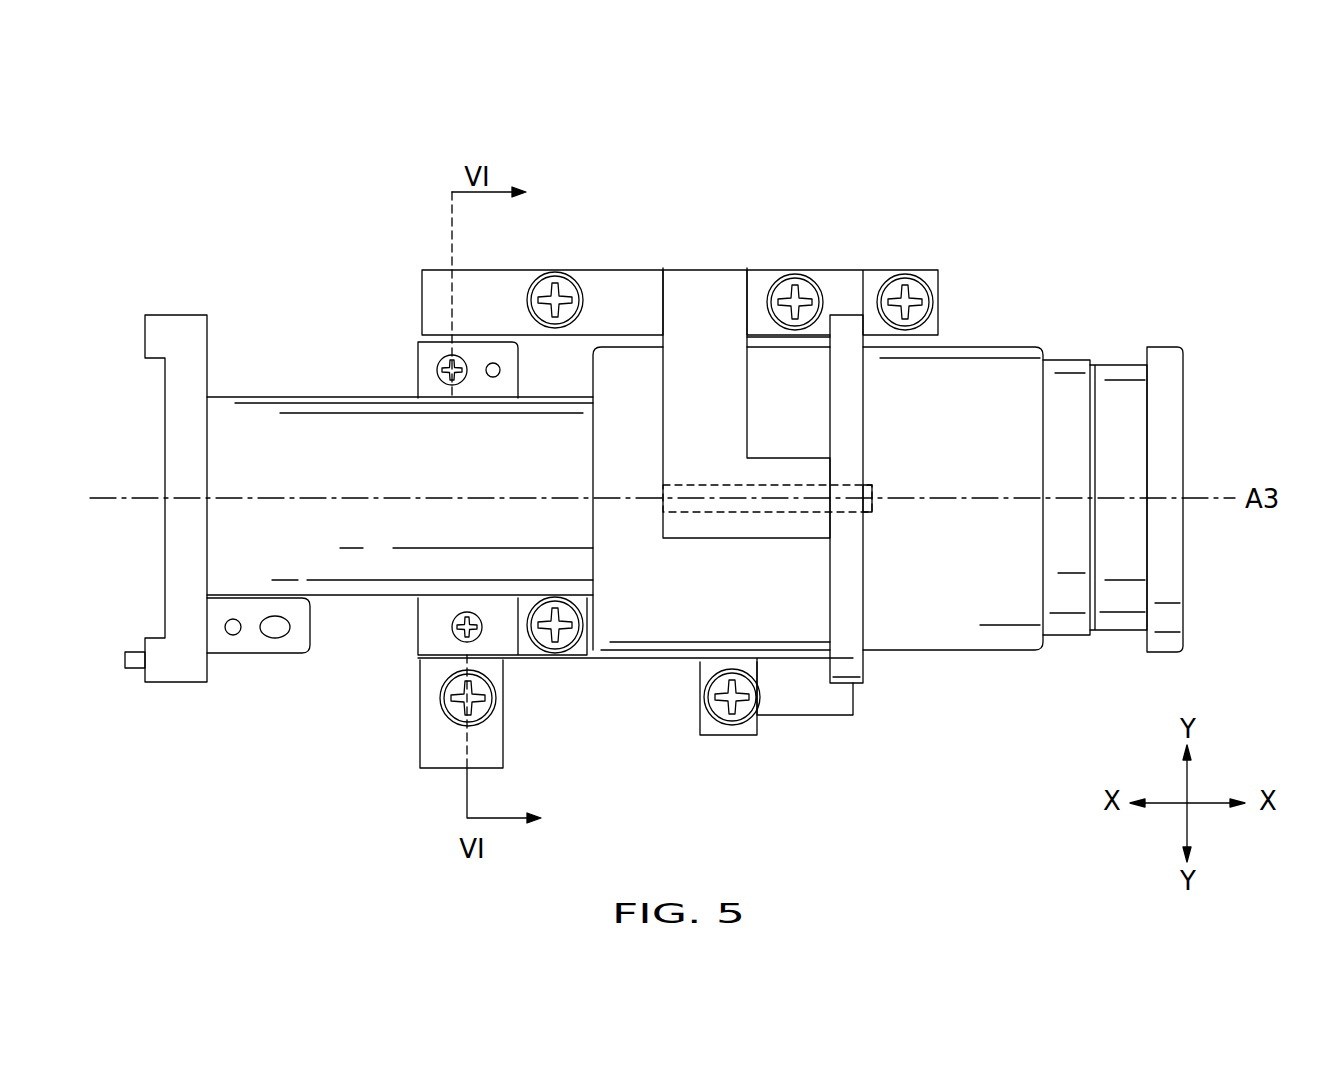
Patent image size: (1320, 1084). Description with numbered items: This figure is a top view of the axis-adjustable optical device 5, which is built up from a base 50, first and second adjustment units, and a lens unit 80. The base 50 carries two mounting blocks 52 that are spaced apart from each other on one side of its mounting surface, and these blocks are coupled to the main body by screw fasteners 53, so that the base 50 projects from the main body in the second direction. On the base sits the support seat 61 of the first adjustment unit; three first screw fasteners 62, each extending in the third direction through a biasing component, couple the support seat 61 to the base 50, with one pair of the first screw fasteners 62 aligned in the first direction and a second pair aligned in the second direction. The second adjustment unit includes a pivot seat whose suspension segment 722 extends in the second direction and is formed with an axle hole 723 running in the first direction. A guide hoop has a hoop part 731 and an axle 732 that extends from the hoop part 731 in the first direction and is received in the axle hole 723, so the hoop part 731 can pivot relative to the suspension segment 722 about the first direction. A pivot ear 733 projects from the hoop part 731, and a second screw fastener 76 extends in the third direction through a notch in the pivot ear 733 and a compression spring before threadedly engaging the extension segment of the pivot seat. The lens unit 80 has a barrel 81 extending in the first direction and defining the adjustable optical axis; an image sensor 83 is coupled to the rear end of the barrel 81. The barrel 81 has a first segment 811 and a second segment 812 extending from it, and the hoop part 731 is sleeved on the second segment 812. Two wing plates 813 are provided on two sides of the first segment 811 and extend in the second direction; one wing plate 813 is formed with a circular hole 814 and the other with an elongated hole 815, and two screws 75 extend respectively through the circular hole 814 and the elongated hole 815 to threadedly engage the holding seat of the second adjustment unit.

The axis-adjustable optical device 5 is at (992, 209).
The base 50 is at (866, 705).
The mounting block 52 is at (428, 747).
The screw fastener 53 is at (482, 718).
The support seat 61 is at (932, 272).
The first screw fastener 62 is at (568, 288).
The screw 75 is at (445, 362).
The second screw fastener 76 is at (783, 275).
The lens unit 80 is at (1122, 356).
The barrel 81 is at (1014, 378).
The image sensor 83 is at (187, 427).
The suspension segment 722 is at (690, 440).
The axle hole 723 is at (772, 513).
The hoop part 731 is at (847, 323).
The axle 732 is at (706, 504).
The pivot ear 733 is at (837, 282).
The first segment 811 is at (420, 485).
The second segment 812 is at (885, 413).
The wing plate 813 is at (483, 347).
The circular hole 814 is at (455, 635).
The elongated hole 815 is at (435, 362).